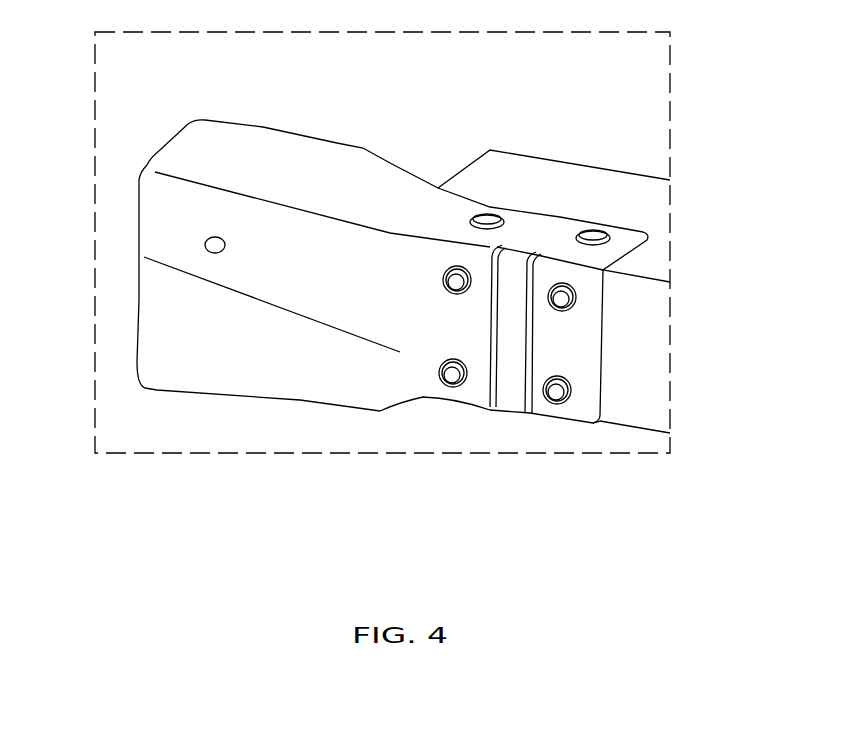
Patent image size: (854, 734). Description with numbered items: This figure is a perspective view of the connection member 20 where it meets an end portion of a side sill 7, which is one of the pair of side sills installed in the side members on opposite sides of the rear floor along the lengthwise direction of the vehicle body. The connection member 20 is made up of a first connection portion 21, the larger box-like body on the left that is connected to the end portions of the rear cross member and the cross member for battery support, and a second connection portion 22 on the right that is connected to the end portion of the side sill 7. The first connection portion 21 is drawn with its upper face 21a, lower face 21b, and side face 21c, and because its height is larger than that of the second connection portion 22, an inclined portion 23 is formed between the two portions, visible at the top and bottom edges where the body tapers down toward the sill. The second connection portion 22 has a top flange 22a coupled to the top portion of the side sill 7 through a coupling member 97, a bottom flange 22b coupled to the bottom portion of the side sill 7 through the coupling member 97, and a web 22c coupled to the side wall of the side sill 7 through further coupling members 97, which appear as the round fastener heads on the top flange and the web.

The side sill 7 is at (640, 202).
The connection member 20 is at (393, 295).
The first connection portion 21 is at (362, 287).
The upper surface of first bracket portion 21a is at (322, 163).
The lower surface of first bracket portion 21b is at (273, 408).
The side surface of first bracket portion 21c is at (152, 343).
The second connection portion 22 is at (592, 319).
The top flange 22a is at (532, 232).
The bottom flange 22b is at (598, 427).
The web 22c is at (575, 345).
The inclined portion 23 is at (402, 178).
The coupling member 97 is at (612, 237).